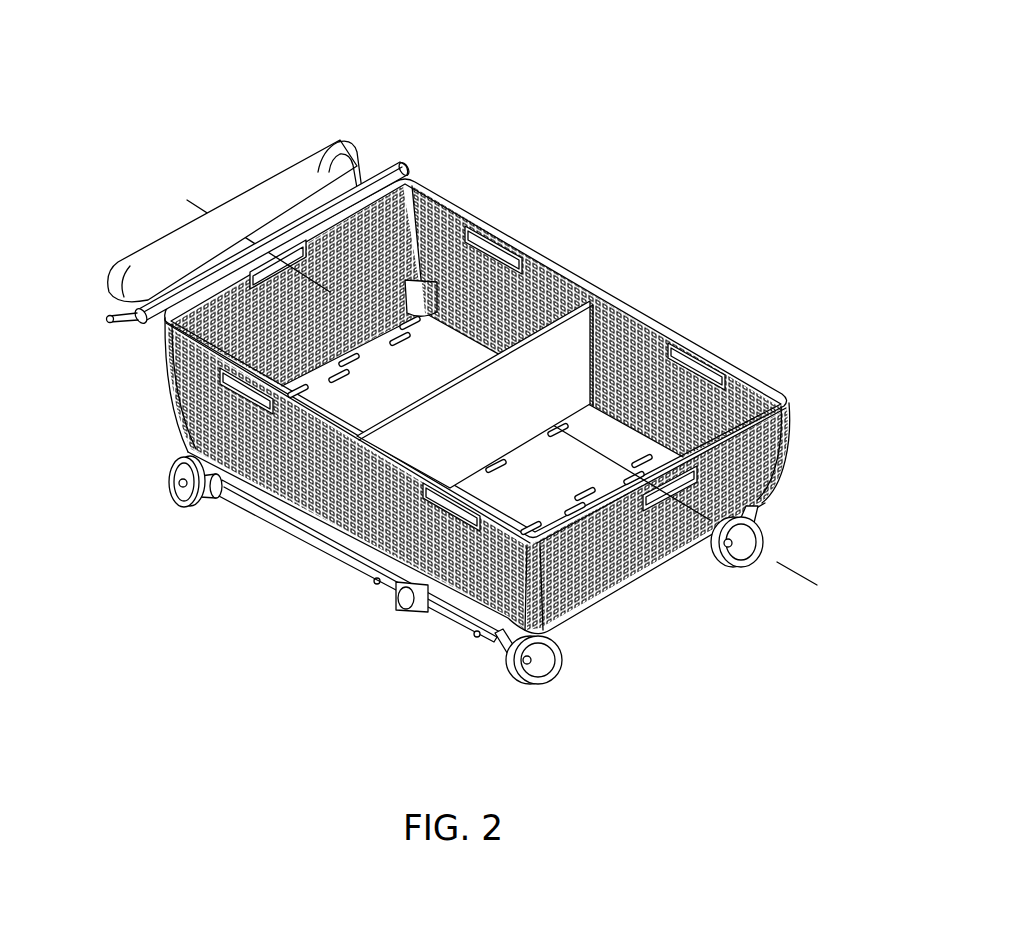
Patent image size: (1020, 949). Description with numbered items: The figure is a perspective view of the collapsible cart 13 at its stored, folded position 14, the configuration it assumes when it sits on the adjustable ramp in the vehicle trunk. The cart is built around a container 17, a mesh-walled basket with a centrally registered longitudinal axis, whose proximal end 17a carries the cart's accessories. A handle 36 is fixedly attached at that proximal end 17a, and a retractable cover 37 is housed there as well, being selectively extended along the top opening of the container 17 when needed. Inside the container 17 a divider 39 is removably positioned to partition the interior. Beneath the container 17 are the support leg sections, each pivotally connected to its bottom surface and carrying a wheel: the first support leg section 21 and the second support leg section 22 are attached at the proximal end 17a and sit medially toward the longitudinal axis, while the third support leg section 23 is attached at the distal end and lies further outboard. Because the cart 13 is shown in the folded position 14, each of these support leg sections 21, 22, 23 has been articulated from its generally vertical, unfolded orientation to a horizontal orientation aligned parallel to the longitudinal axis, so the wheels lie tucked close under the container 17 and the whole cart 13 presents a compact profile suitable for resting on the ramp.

The collapsible cart 13 is at (605, 125).
The folded position 14 is at (681, 287).
The container 17 is at (558, 265).
The proximal end of the container 17a is at (168, 380).
The first support leg section 21 is at (500, 664).
The second support leg section 22 is at (726, 567).
The third support leg section 23 is at (203, 514).
The handle 36 is at (307, 160).
The retractable cover 37 is at (113, 316).
The divider 39 is at (427, 350).